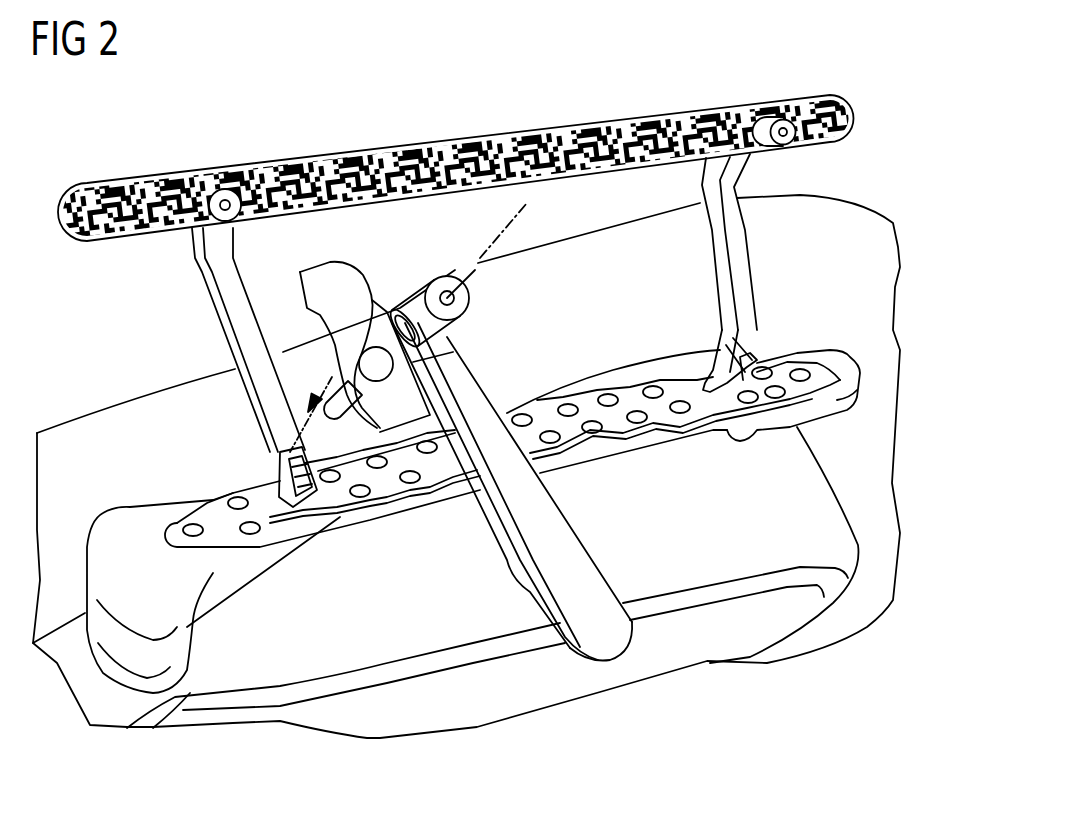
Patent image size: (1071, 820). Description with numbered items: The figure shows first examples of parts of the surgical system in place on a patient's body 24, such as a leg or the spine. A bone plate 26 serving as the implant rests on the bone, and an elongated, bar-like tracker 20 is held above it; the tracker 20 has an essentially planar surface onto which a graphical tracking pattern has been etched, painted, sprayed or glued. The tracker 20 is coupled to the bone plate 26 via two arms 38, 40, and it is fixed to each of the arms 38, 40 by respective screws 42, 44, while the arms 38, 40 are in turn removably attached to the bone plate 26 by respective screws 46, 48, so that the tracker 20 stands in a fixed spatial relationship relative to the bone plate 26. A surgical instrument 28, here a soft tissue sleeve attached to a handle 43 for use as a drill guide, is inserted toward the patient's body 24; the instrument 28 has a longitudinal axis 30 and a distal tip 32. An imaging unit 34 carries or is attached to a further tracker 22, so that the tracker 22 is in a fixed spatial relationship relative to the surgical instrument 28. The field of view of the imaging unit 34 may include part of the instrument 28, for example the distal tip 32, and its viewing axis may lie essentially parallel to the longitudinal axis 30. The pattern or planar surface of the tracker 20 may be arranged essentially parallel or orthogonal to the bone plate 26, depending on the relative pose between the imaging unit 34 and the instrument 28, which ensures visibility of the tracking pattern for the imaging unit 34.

The tracker 20 is at (540, 139).
The tracker 22 is at (372, 350).
The patient's body 24 is at (833, 208).
The bone plate 26 is at (813, 380).
The surgical instrument 28 is at (337, 413).
The longitudinal axis 30 is at (490, 243).
The distal tip 32 is at (312, 395).
The imaging unit 34 is at (328, 272).
The arm 38 is at (740, 276).
The arm 40 is at (230, 308).
The screw 42 is at (786, 123).
The handle 43 is at (622, 640).
The screw 44 is at (216, 202).
The screw 46 is at (757, 352).
The screw 48 is at (297, 470).